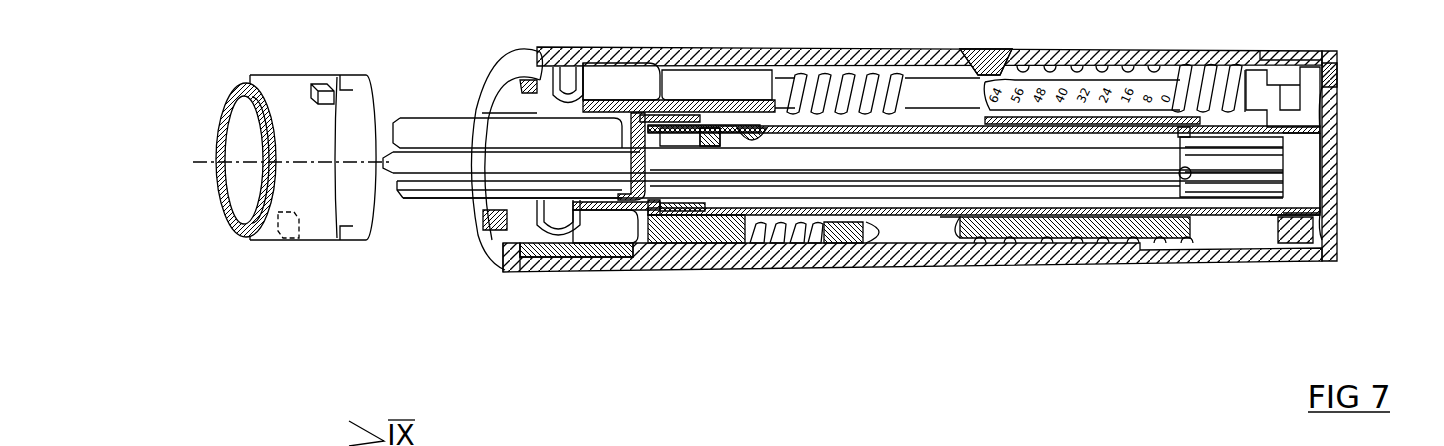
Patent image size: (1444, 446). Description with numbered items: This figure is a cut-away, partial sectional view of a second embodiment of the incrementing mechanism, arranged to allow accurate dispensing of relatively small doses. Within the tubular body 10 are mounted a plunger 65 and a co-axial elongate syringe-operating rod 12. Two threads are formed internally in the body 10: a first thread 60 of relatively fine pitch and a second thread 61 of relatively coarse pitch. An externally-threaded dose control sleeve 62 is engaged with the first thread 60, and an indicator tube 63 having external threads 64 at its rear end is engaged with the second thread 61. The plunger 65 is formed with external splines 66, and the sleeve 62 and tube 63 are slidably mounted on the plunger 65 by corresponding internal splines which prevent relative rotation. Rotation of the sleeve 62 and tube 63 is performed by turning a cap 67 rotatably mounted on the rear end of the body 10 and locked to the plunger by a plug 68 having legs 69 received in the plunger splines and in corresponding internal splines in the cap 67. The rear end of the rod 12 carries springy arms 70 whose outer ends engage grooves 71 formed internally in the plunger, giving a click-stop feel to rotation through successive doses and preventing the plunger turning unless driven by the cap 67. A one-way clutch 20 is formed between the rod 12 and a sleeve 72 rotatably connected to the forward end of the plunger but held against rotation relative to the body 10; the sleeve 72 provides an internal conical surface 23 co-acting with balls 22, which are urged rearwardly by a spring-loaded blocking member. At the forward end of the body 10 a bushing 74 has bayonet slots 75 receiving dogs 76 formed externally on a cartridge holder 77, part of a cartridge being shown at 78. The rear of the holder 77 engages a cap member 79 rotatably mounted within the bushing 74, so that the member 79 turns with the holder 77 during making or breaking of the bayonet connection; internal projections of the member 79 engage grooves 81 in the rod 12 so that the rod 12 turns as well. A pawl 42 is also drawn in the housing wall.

The tubular body 10 is at (985, 253).
The syringe-operating rod 12 is at (445, 138).
The one-way clutch 20 is at (757, 93).
The balls 22 is at (743, 133).
The conical surface 23 is at (728, 213).
The pawl 42 is at (985, 63).
The first thread 60 is at (783, 233).
The second thread 61 is at (1113, 240).
The dose control sleeve 62 is at (847, 233).
The indicator tube 63 is at (1057, 230).
The external threads 64 is at (1202, 85).
The plunger 65 is at (923, 208).
The external splines 66 is at (920, 90).
The cap 67 is at (1298, 52).
The plug 68 is at (1340, 226).
The legs 69 is at (1303, 242).
The springy arms 70 is at (1181, 181).
The grooves 71 is at (1272, 171).
The sleeve 72 is at (723, 228).
The bushing 74 is at (617, 80).
The bayonet slots 75 is at (564, 72).
The dogs 76 is at (323, 84).
The cartridge holder 77 is at (316, 220).
The cartridge 78 is at (231, 226).
The cap member 79 is at (610, 230).
The grooves 81 is at (443, 187).